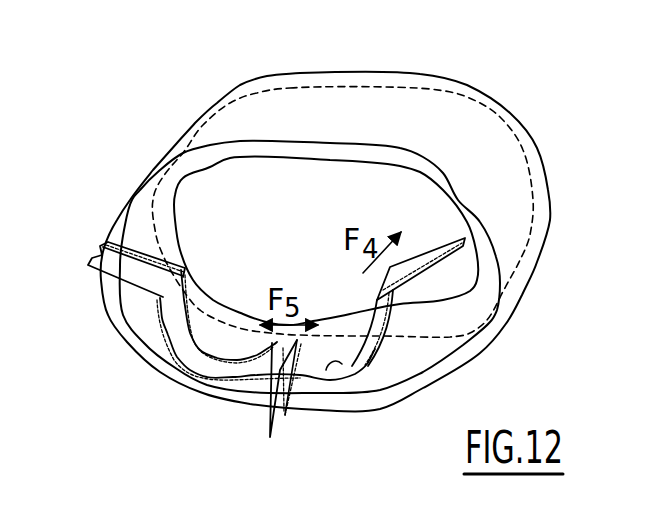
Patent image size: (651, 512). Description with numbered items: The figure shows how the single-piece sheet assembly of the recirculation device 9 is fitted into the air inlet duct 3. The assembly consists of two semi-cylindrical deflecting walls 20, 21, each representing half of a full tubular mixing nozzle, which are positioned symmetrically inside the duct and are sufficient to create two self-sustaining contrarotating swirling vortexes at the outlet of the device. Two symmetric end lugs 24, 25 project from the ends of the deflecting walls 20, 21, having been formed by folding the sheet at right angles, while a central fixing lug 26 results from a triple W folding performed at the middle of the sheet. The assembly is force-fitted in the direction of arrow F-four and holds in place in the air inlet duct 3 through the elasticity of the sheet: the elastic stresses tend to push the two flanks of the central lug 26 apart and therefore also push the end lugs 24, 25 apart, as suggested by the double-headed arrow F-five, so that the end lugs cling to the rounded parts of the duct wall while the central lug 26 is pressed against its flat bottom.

The air inlet duct 3 is at (487, 137).
The recirculation device 9 is at (232, 378).
The semi-cylindrical deflecting wall 20 is at (185, 345).
The semi-cylindrical deflecting wall 21 is at (332, 363).
The fixing lug 24 is at (153, 272).
The fixing lug 25 is at (413, 268).
The central fixing lug 26 is at (283, 420).